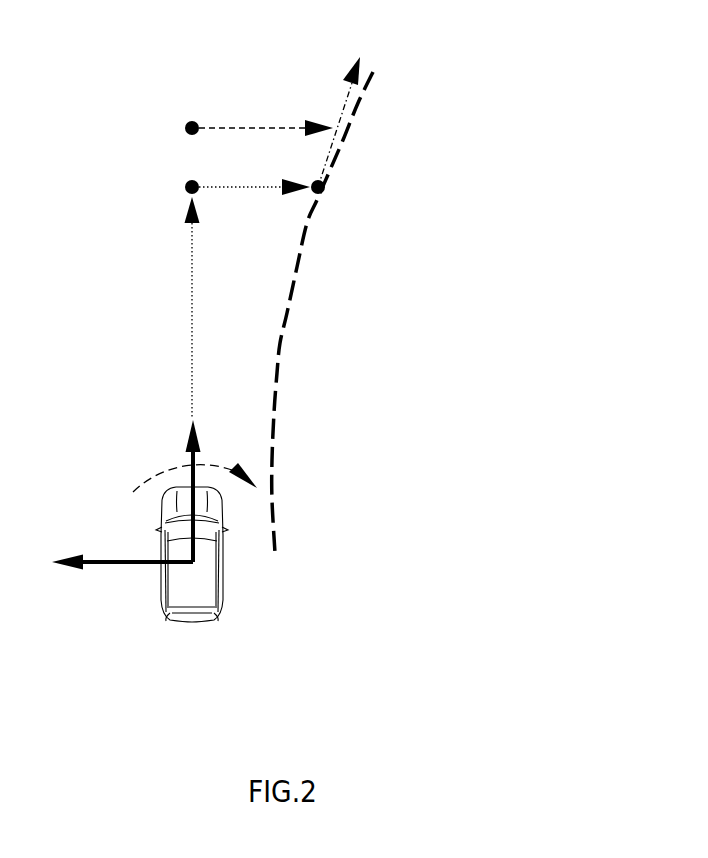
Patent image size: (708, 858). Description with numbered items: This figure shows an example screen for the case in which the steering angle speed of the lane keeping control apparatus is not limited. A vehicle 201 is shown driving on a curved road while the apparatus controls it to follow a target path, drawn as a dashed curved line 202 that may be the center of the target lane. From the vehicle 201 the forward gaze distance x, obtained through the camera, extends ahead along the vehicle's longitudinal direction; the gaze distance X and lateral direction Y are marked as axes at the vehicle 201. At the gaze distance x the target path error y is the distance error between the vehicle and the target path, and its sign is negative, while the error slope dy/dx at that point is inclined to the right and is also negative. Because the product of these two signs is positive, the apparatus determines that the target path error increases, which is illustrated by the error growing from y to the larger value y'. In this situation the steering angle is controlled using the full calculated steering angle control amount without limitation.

The vehicle 201 is at (218, 583).
The lane line / reference path 202 is at (277, 382).
The gaze distance X is at (179, 491).
The vehicle lateral axis Y is at (122, 550).
The forward gaze distance x is at (185, 307).
The increased target path error y' is at (266, 116).